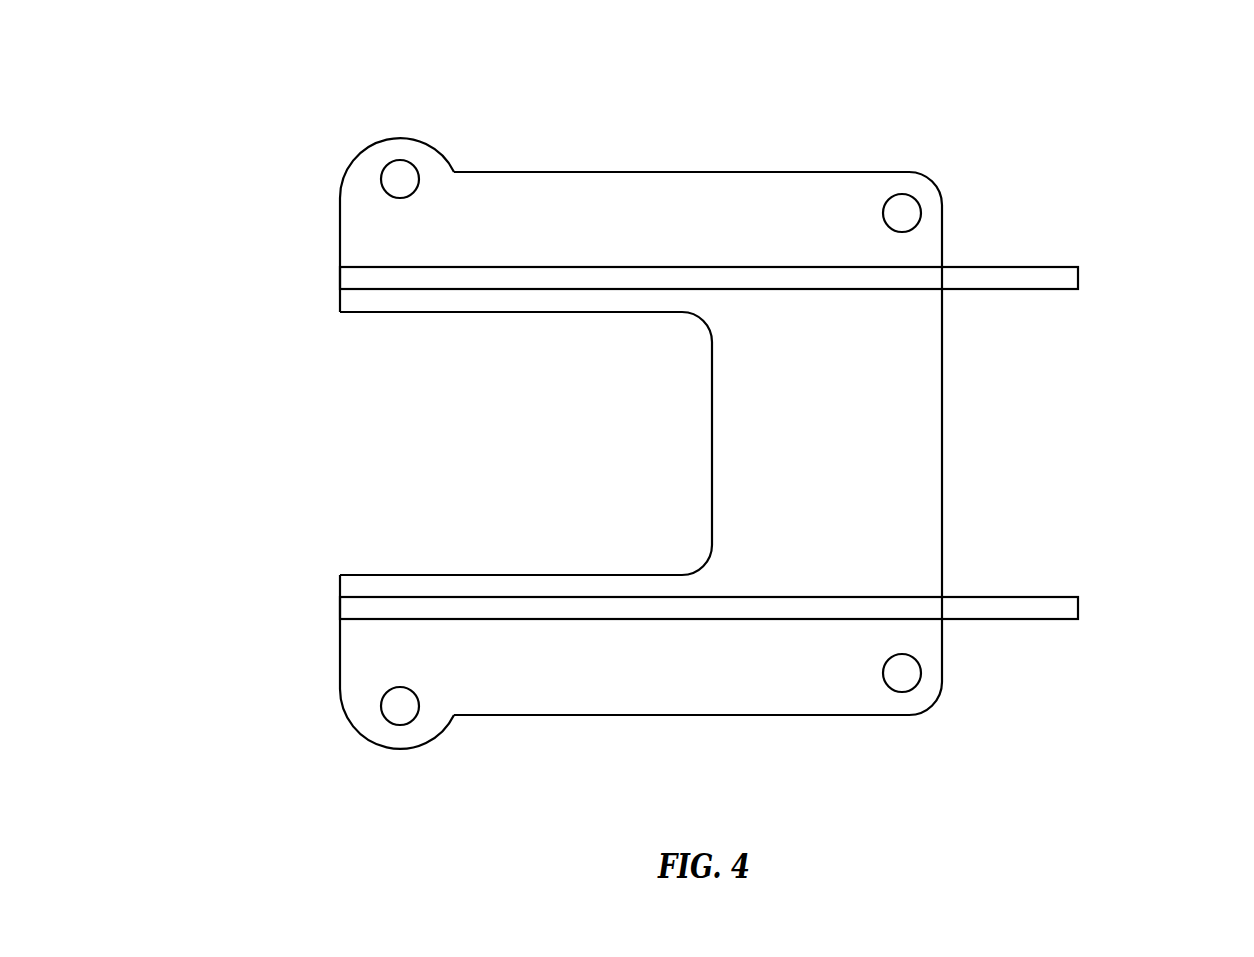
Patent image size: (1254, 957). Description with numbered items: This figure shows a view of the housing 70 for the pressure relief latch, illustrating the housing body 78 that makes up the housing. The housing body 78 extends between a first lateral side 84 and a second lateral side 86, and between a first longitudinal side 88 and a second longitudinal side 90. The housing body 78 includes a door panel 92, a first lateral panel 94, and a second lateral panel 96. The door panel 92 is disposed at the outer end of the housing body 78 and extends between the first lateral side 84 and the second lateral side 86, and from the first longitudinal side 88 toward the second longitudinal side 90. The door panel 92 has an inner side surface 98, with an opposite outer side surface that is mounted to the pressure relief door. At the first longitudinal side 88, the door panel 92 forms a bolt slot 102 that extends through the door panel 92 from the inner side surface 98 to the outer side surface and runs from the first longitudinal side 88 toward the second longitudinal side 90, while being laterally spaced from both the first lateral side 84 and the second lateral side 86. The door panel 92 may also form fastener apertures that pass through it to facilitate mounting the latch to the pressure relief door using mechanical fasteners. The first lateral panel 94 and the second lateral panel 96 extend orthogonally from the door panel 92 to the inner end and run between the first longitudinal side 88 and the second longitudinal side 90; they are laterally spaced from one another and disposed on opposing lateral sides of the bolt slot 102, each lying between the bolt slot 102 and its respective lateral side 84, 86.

The housing 70 is at (1065, 110).
The housing body 78 is at (802, 172).
The first lateral side 84 is at (900, 149).
The second lateral side 86 is at (899, 741).
The first longitudinal side 88 is at (298, 665).
The second longitudinal side 90 is at (1095, 438).
The door panel 92 is at (923, 363).
The first lateral panel 94 is at (642, 267).
The second lateral panel 96 is at (642, 619).
The inner side surface 98 is at (923, 535).
The bolt slot 102 is at (390, 508).